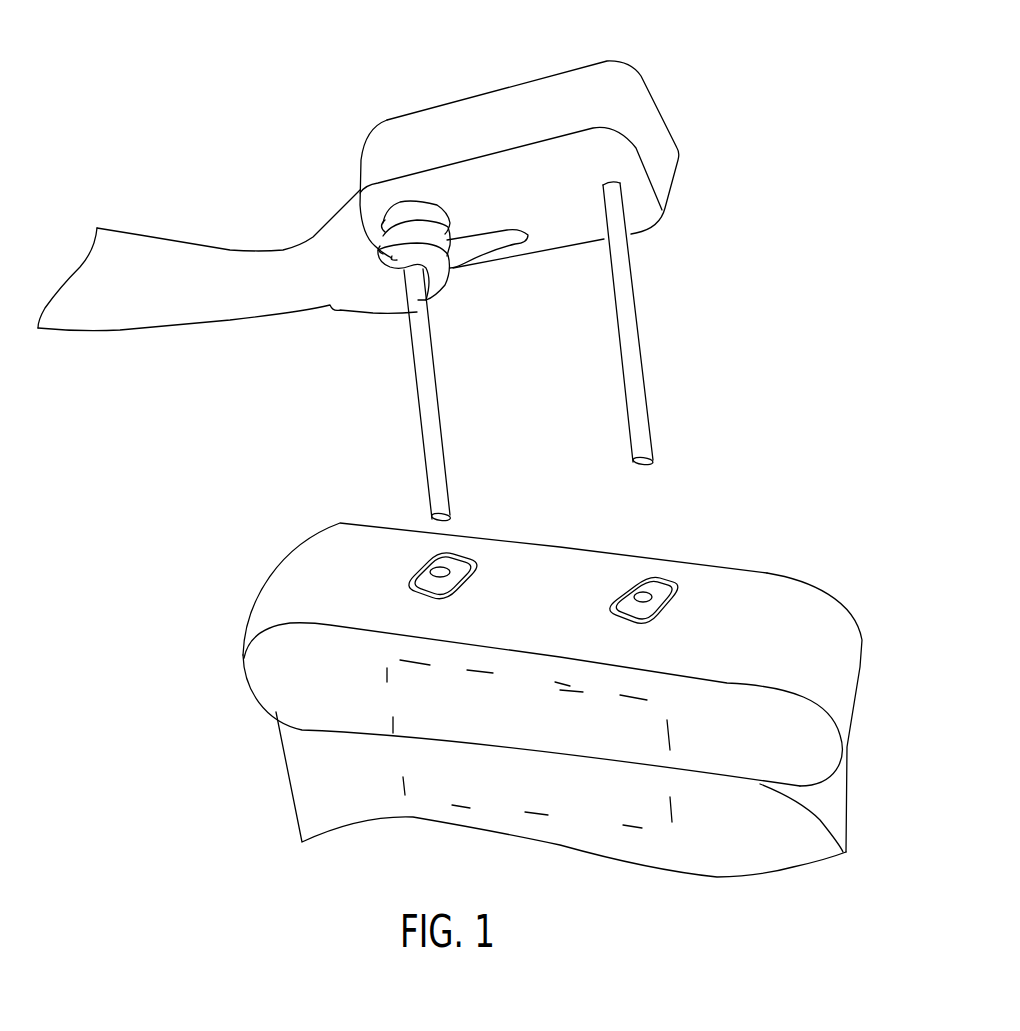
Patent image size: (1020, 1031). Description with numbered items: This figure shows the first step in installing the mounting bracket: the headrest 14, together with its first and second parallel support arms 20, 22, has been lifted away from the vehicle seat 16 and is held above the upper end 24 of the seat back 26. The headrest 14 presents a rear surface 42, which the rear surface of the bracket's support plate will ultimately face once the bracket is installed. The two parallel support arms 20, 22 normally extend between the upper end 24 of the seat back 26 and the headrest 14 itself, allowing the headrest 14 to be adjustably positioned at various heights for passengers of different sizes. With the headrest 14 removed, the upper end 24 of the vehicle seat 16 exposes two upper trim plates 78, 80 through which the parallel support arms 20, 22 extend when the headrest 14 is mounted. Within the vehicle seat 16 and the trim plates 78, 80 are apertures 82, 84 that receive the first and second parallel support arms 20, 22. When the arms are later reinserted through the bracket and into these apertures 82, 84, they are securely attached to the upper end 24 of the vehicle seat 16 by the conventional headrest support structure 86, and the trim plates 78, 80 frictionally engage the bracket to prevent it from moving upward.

The headrest 14 is at (395, 133).
The rear surface of the headrest 42 is at (515, 100).
The first parallel support arm 20 is at (637, 352).
The second parallel support arm 22 is at (433, 398).
The vehicle seat 16 is at (320, 547).
The upper end of the seat back 24 is at (757, 588).
The seat back 26 is at (843, 593).
The first upper trim plate 78 is at (628, 585).
The second upper trim plate 80 is at (462, 557).
The first aperture in the vehicle seat 82 is at (650, 600).
The second aperture in the vehicle seat 84 is at (440, 572).
The conventional headrest support structure 86 is at (597, 802).